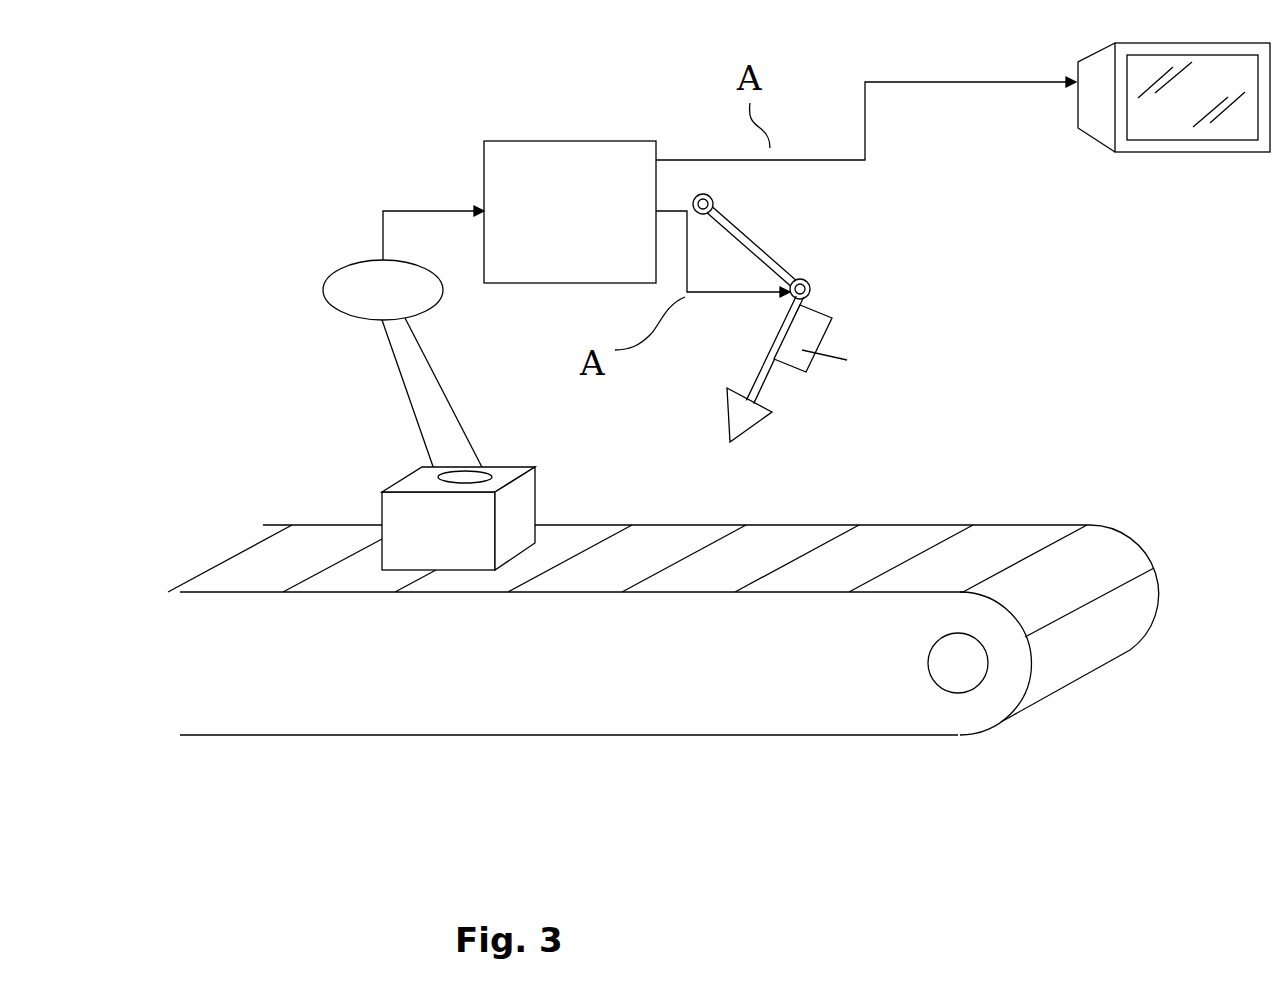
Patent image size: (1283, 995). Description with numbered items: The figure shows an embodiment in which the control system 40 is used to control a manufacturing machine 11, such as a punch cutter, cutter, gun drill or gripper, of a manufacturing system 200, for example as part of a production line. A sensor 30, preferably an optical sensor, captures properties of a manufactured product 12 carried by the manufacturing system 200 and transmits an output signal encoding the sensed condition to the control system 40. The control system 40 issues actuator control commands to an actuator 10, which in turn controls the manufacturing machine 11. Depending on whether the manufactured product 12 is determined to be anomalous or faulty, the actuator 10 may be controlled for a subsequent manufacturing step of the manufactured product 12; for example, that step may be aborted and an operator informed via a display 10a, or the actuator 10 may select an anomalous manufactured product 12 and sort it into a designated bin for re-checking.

The actuator 10 is at (825, 332).
The display 10a is at (1073, 122).
The manufacturing machine 11 is at (770, 255).
The manufactured product 12 is at (543, 498).
The sensor 30 is at (323, 292).
The control system 40 is at (470, 148).
The manufacturing system 200 is at (557, 737).